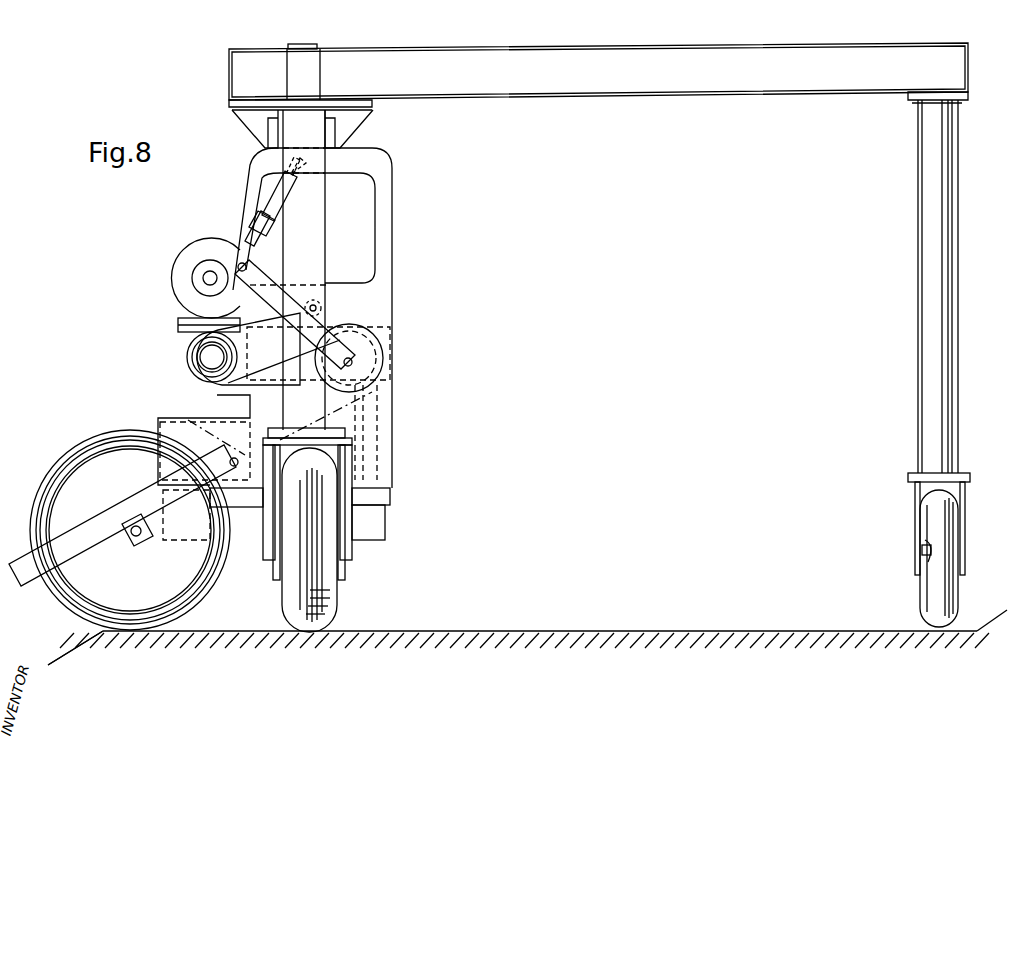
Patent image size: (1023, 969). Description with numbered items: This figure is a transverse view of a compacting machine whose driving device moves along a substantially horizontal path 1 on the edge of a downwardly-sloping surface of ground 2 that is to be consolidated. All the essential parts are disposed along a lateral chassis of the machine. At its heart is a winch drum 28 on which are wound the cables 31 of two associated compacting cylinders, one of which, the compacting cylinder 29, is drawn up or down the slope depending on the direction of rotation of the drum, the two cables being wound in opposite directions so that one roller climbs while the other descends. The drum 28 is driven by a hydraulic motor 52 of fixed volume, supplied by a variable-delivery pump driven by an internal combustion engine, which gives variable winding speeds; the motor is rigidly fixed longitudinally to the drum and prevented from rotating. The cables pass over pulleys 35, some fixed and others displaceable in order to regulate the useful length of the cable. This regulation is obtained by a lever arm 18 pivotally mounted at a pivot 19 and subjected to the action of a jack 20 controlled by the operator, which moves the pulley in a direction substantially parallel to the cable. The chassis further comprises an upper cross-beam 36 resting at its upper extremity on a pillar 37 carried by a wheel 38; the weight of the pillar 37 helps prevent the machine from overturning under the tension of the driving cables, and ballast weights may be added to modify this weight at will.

The substantially horizontal path 1 is at (596, 630).
The downwardly-sloping surface of ground 2 is at (72, 653).
The lever arm 18 is at (298, 293).
The pivot 19 is at (322, 306).
The jack 20 is at (276, 214).
The winch drum 28 is at (195, 360).
The compacting cylinder 29 is at (93, 470).
The cable 31 is at (190, 420).
The pulley 35 is at (383, 374).
The upper cross-beam 36 is at (516, 78).
The pillar 37 is at (940, 182).
The wheel 38 is at (945, 528).
The hydraulic motor 52 is at (178, 268).